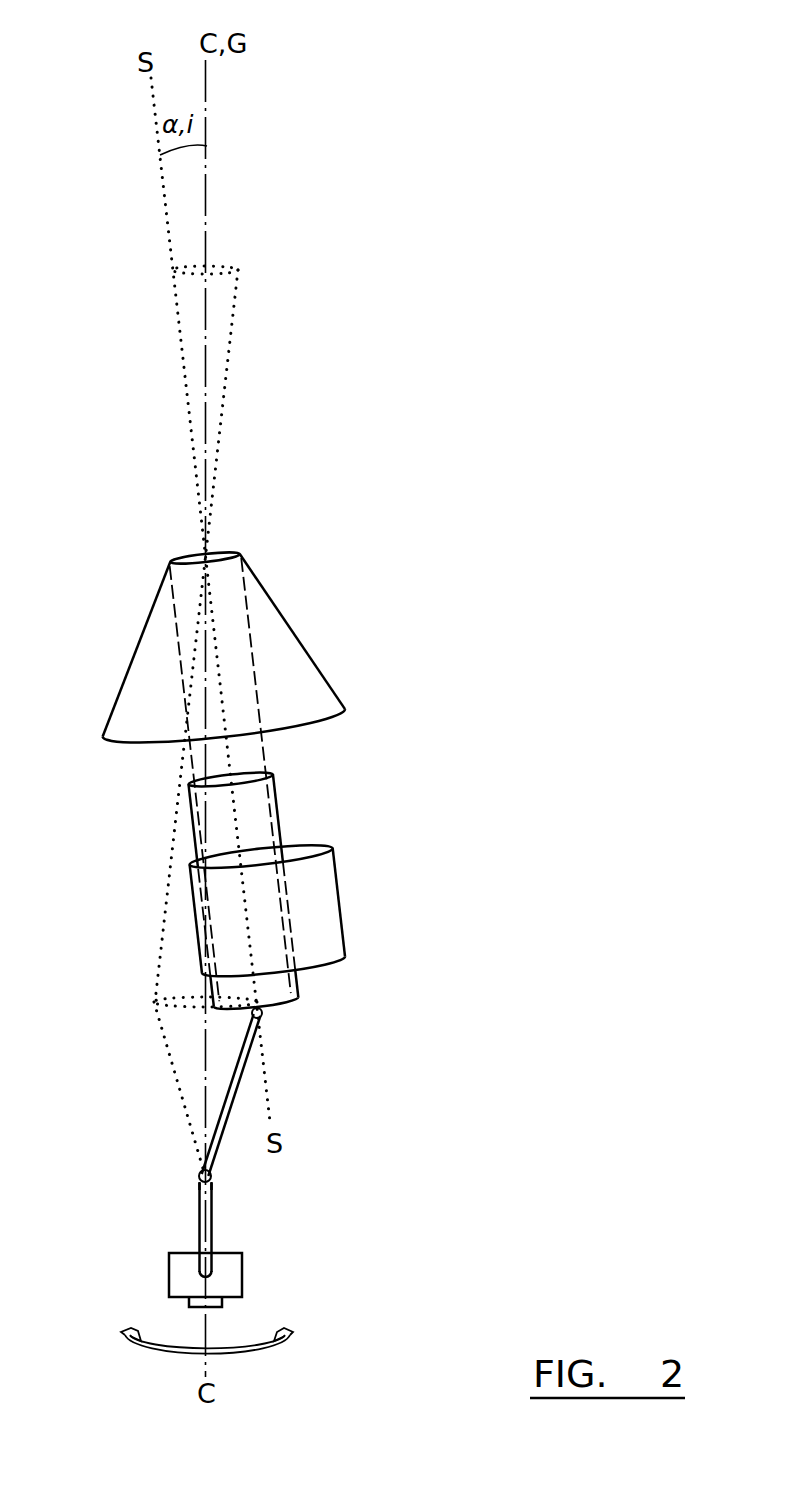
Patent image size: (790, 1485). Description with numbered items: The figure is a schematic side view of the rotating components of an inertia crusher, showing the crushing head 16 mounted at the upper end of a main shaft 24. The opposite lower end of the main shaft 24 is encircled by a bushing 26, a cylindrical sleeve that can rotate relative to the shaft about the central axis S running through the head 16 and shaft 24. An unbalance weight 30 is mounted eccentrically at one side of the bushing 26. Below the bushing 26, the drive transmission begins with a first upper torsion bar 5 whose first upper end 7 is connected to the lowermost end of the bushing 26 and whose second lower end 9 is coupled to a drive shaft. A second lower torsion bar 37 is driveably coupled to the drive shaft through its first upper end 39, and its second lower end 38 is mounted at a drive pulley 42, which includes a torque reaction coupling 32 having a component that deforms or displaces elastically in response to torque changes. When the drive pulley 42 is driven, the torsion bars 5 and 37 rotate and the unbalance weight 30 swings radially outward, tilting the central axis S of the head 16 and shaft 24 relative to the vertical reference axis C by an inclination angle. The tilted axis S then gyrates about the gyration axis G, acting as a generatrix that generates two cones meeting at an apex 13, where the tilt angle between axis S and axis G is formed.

The first upper torsion bar 5 is at (218, 1142).
The first upper end 7 is at (263, 1018).
The second lower end 9 is at (203, 1172).
The apex 13 is at (207, 557).
The crushing head 16 is at (297, 629).
The main shaft 24 is at (270, 810).
The bushing 26 is at (290, 895).
The unbalance weight 30 is at (343, 922).
The torque reaction coupling 32 is at (198, 1307).
The second lower torsion bar 37 is at (212, 1220).
The second lower end 38 is at (207, 1277).
The first upper end 39 is at (200, 1177).
The drive pulley 42 is at (170, 1273).